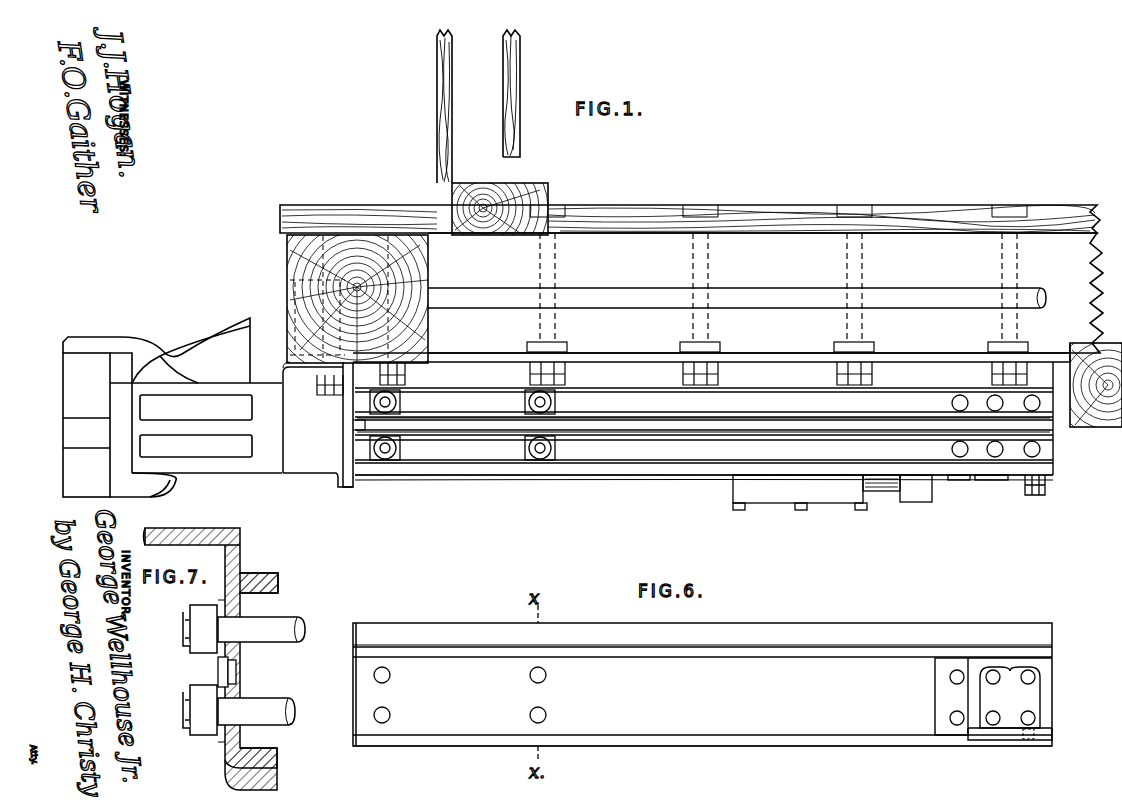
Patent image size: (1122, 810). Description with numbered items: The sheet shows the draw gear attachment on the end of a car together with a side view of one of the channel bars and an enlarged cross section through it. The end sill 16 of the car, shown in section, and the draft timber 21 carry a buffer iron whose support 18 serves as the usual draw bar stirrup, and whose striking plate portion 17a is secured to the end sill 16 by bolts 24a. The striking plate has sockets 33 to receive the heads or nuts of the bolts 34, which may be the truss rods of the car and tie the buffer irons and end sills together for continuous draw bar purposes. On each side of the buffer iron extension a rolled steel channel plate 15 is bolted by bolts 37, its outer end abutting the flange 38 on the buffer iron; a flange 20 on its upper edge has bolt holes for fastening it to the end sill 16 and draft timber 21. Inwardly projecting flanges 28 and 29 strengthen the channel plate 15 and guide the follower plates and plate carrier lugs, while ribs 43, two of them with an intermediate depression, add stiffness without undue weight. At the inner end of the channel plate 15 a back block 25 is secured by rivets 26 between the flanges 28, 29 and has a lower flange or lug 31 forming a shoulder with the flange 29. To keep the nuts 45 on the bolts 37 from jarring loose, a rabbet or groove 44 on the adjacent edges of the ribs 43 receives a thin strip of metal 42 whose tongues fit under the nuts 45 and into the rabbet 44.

In FIG. 1, the channel plate 15 is at (812, 432).
In FIG. 6, the channel plate 15 is at (702, 684).
In FIG. 1, the end sill 16 is at (357, 287).
In FIG. 1, the portion of the striking plate 17a is at (318, 424).
In FIG. 1, the support 18 is at (308, 482).
In FIG. 7, the flange 20 is at (192, 525).
In FIG. 1, the draft timber 21 is at (765, 293).
In FIG. 1, the bolts 24a is at (280, 232).
In FIG. 6, the back block 25 is at (1052, 693).
In FIG. 6, the rivets 26 is at (952, 684).
In FIG. 7, the flange 28 is at (278, 580).
In FIG. 6, the flange 28 is at (646, 652).
In FIG. 7, the flange 29 is at (278, 755).
In FIG. 6, the flange 29 is at (672, 744).
In FIG. 6, the flange or lug 31 is at (1052, 735).
In FIG. 1, the socket 33 is at (290, 278).
In FIG. 1, the bolts 34 is at (737, 298).
In FIG. 1, the bolts 37 is at (397, 404).
In FIG. 7, the bolts 37 is at (261, 671).
In FIG. 1, the flange 38 is at (352, 428).
In FIG. 7, the thin strip of metal 42 is at (218, 665).
In FIG. 1, the ribs 43 is at (704, 418).
In FIG. 7, the ribs 43 is at (222, 607).
In FIG. 7, the rabbet or groove 44 is at (236, 662).
In FIG. 7, the nuts 45 is at (190, 647).